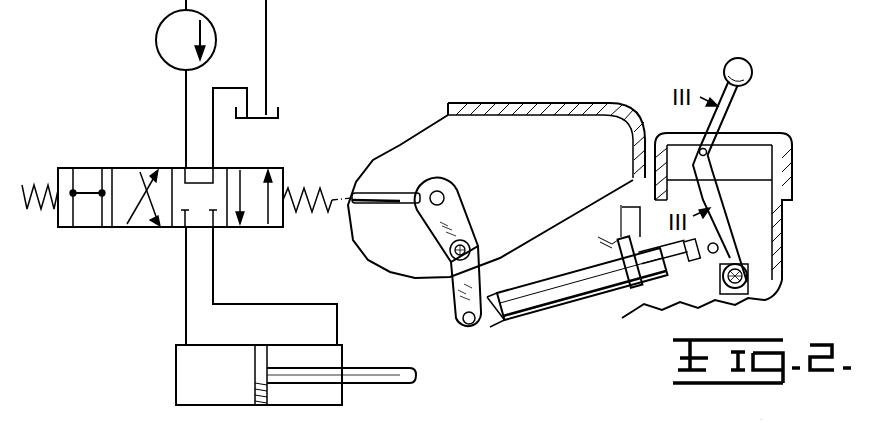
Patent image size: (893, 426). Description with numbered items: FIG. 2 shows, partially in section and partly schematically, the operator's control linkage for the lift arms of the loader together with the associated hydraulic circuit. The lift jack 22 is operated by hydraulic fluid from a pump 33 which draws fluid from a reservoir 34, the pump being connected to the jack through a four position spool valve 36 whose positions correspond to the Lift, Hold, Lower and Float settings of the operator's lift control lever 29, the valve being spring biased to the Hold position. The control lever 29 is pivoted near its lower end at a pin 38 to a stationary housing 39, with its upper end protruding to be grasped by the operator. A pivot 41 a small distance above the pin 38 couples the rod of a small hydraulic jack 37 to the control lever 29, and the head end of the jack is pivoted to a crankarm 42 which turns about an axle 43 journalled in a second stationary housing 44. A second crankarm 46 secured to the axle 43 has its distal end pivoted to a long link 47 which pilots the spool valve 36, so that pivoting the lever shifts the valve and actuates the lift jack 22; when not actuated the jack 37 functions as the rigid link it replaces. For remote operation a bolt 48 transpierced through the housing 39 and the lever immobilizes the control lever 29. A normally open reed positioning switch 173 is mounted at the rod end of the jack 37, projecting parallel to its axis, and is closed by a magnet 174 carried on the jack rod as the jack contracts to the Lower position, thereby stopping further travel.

The lift jack 22 is at (202, 396).
The operator's lift control lever 29 is at (750, 74).
The pump 33 is at (165, 60).
The reservoir 34 is at (262, 119).
The four position spool valve 36 is at (99, 244).
The hydraulic jack 37 is at (575, 302).
The pin 38 is at (748, 288).
The stationary housing 39 is at (786, 238).
The pivot 41 is at (717, 244).
The crankarm 42 is at (480, 282).
The axle 43 is at (468, 244).
The second stationary housing 44 is at (513, 110).
The second crankarm 46 is at (457, 200).
The long link 47 is at (391, 195).
The bolt 48 is at (707, 154).
The positioning switch 173 is at (630, 205).
The magnet 174 is at (700, 260).